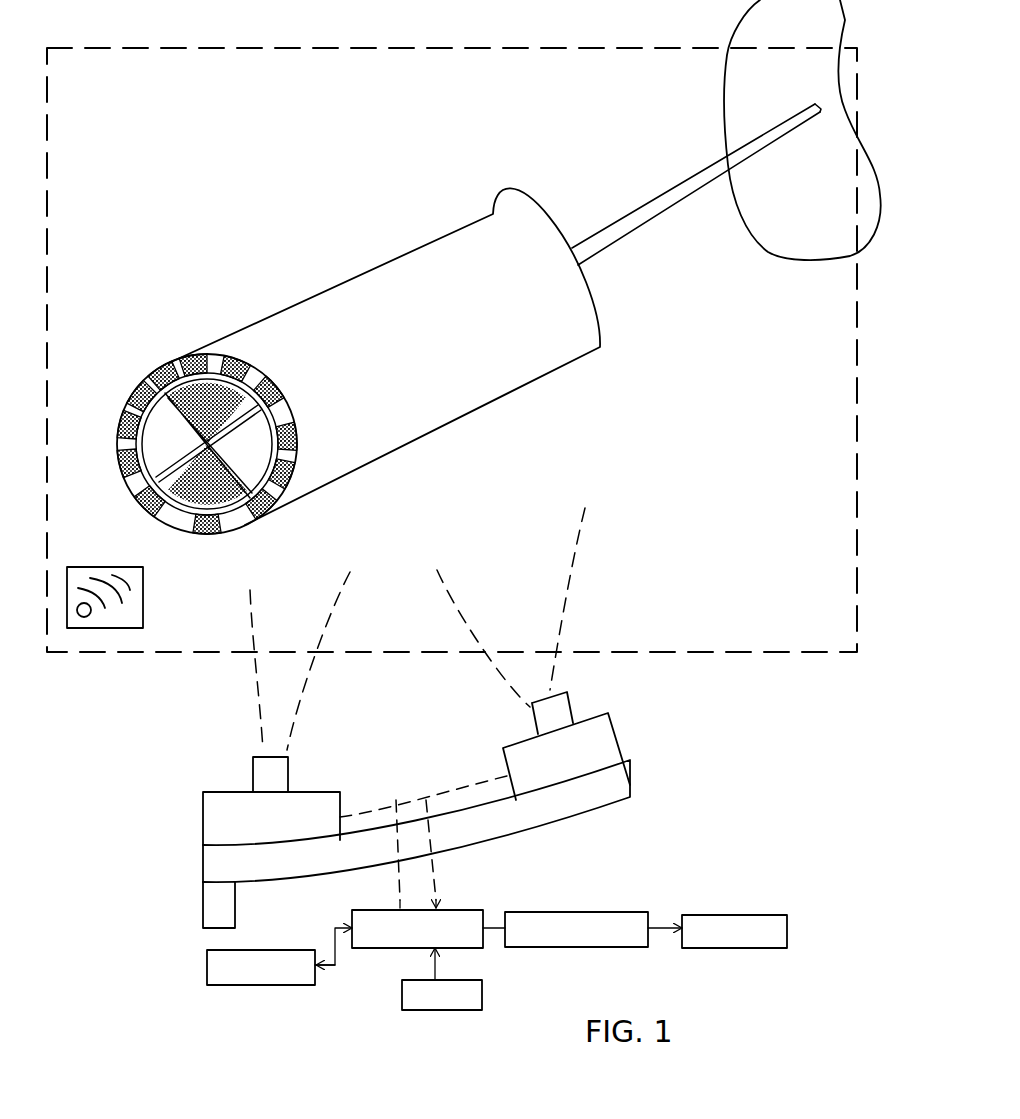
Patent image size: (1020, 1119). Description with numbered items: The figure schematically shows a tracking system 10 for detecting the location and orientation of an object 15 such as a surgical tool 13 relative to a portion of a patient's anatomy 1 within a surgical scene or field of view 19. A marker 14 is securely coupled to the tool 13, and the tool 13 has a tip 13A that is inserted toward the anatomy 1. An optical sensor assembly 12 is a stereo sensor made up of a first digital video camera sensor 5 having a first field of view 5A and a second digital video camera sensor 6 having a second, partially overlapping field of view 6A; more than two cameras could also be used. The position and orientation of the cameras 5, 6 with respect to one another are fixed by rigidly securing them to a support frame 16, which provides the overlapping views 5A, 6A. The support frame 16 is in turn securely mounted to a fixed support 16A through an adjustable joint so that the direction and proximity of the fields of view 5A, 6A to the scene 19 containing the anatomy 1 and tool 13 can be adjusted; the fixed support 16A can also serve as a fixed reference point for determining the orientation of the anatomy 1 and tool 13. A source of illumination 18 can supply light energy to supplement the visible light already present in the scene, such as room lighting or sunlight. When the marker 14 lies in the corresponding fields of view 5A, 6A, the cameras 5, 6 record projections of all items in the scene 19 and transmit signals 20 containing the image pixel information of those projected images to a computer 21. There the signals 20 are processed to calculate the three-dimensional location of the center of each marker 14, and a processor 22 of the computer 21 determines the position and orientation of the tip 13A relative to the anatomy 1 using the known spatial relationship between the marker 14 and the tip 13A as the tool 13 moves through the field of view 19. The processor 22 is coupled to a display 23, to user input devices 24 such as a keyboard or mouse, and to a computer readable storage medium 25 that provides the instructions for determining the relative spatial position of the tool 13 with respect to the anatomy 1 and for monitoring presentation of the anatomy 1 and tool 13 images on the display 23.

The patient's anatomy 1 is at (785, 258).
The first digital video camera sensor 5 is at (213, 822).
The first field of view 5A is at (257, 663).
The second digital video camera sensor 6 is at (617, 738).
The second field of view 6A is at (552, 692).
The tracking system 10 is at (658, 742).
The optical sensor assembly 12 is at (397, 800).
The surgical tool 13 is at (622, 238).
The tip of the tool 13A is at (820, 108).
The marker 14 is at (253, 517).
The object 15 is at (463, 403).
The support frame 16 is at (543, 813).
The fixed support 16A is at (210, 907).
The source of illumination 18 is at (127, 570).
The field of view 19 is at (72, 655).
The signals 20 is at (393, 822).
The computer 21 is at (377, 948).
The processor 22 is at (580, 947).
The display 23 is at (733, 915).
The user input devices 24 is at (453, 1010).
The computer readable storage medium 25 is at (263, 985).